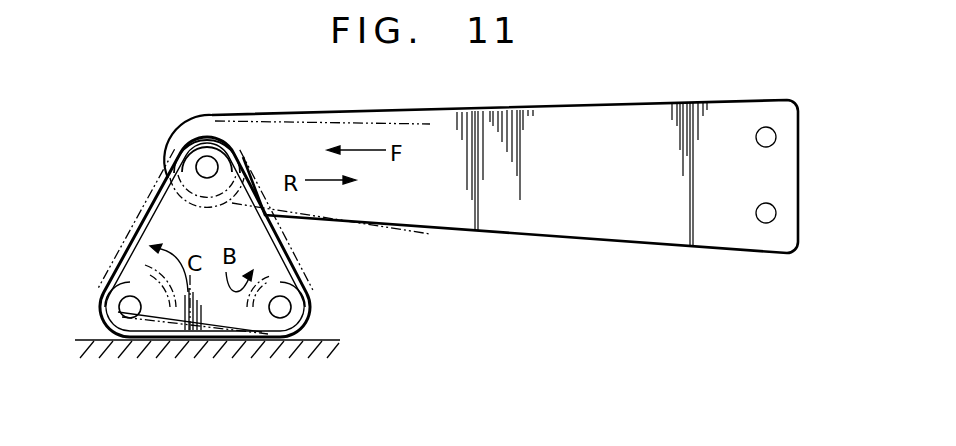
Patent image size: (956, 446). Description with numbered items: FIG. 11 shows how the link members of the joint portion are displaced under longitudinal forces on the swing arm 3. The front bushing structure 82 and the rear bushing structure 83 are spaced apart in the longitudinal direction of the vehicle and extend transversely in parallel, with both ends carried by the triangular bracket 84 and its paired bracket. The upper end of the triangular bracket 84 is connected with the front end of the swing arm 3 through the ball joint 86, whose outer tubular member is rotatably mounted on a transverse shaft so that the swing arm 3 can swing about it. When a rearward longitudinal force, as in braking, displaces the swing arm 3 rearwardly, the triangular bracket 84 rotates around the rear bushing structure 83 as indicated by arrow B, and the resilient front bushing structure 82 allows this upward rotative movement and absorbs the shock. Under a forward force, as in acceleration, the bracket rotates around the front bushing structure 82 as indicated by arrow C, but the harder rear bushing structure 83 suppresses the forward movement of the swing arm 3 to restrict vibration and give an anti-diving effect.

The swing arm 3 is at (637, 122).
The front bushing structure 82 is at (130, 322).
The rear bushing structure 83 is at (280, 322).
The triangular bracket 84 is at (167, 218).
The ball joint 86 is at (198, 167).